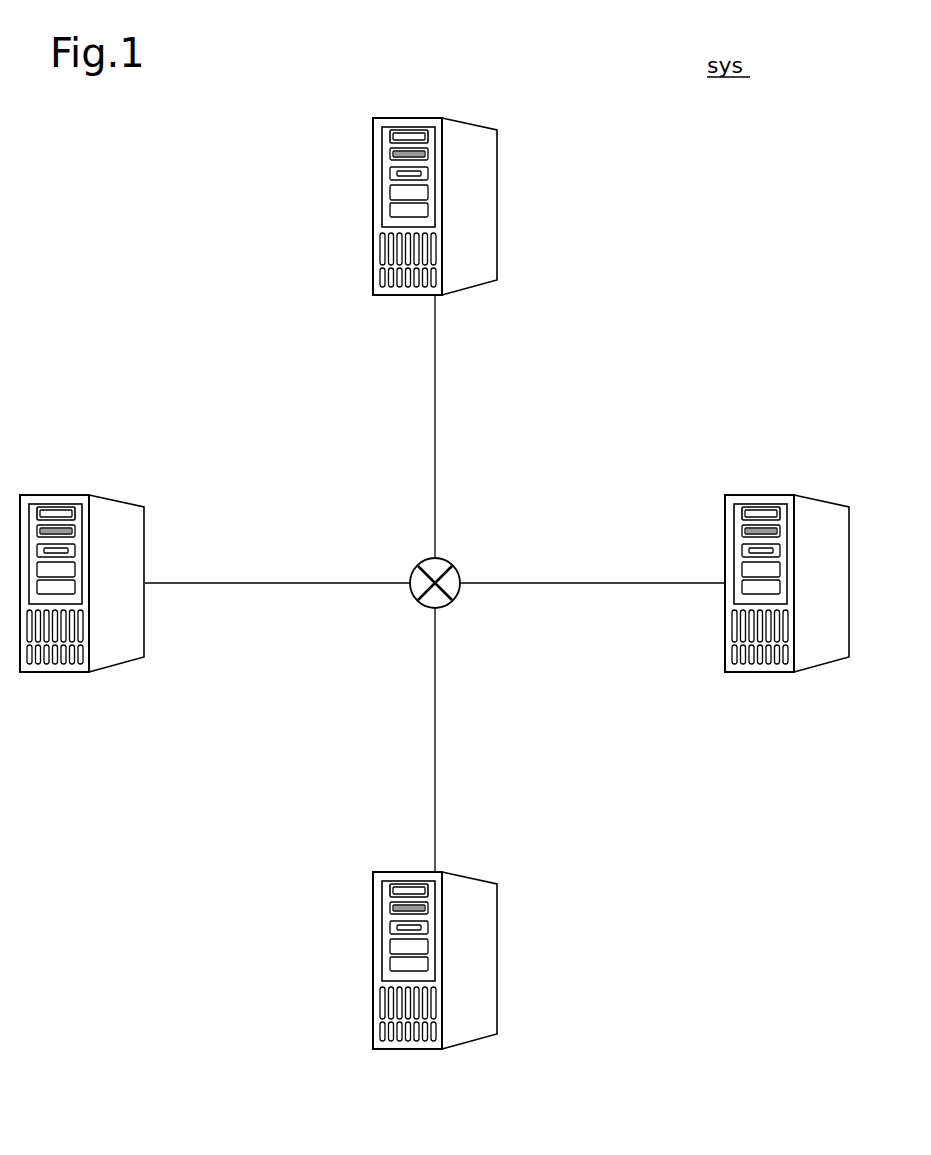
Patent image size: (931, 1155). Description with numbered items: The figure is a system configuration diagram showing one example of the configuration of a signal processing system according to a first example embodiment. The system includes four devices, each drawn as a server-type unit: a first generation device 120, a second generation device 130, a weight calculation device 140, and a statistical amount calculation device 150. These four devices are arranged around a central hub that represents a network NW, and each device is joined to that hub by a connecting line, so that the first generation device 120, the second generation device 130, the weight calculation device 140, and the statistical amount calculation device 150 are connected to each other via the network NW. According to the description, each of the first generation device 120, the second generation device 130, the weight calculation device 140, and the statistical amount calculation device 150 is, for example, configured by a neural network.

The first generation device 120 is at (56, 495).
The second generation device 130 is at (463, 878).
The weight calculation device 140 is at (762, 495).
The statistical amount calculation device 150 is at (410, 117).
The network NW is at (452, 560).